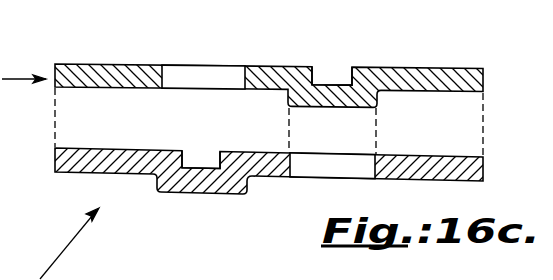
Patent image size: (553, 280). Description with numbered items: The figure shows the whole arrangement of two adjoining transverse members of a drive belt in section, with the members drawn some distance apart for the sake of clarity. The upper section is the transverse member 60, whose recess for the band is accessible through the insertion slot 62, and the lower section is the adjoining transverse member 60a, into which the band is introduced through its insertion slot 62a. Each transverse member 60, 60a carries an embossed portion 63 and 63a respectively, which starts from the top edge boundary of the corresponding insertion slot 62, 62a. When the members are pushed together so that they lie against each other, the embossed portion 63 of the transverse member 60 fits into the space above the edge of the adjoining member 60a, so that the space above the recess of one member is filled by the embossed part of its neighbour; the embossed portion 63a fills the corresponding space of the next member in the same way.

The transverse member 60 is at (486, 79).
The adjoining transverse member 60a is at (458, 176).
The slot 62 is at (198, 72).
The slot 62a is at (336, 164).
The embossed portion 63 is at (379, 95).
The embossed portion 63a is at (231, 183).